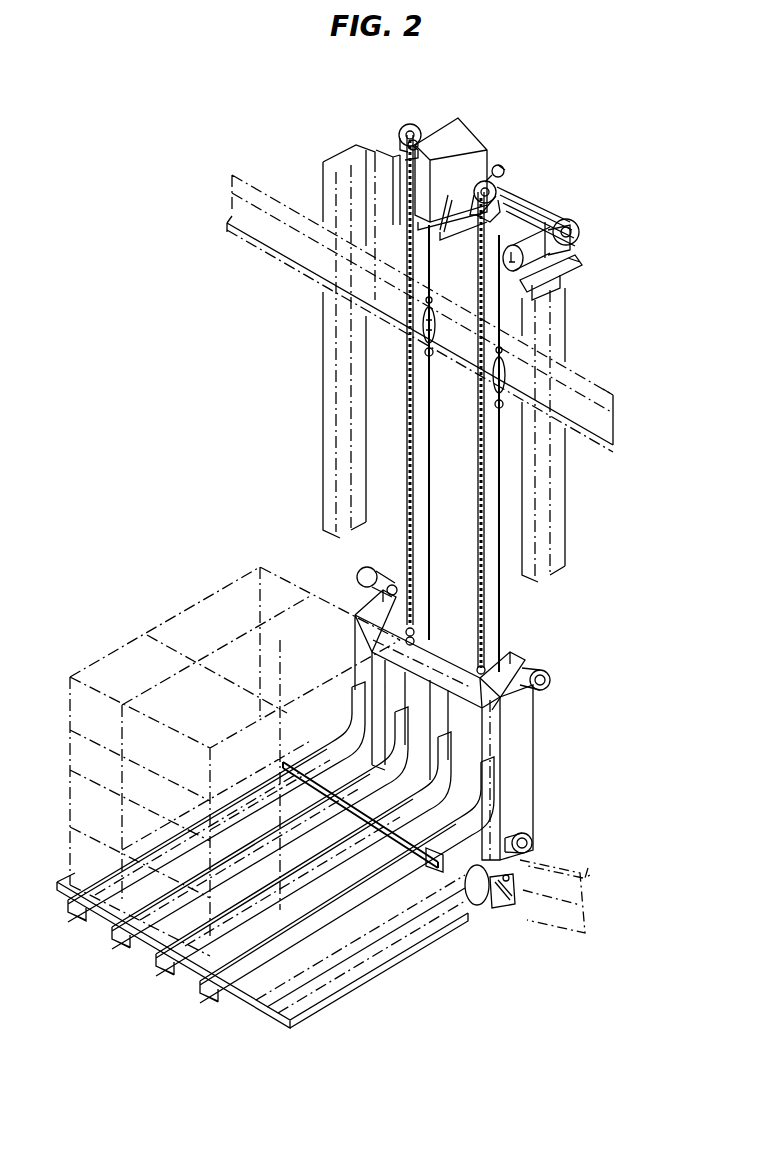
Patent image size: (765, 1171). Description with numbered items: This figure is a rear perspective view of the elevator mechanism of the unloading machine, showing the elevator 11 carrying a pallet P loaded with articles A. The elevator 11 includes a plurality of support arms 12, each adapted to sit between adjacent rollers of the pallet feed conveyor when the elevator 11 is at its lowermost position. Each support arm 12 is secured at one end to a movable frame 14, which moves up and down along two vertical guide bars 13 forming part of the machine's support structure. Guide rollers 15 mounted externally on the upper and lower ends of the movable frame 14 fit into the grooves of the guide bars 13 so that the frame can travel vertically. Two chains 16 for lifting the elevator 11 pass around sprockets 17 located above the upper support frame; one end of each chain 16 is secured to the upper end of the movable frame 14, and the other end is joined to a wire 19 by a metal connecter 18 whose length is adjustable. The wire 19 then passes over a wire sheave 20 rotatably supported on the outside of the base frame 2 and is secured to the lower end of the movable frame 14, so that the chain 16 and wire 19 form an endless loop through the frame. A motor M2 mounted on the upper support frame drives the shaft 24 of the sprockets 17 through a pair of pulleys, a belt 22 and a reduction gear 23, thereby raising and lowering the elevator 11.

The base frame 2 is at (575, 870).
The elevator 11 is at (554, 778).
The support arms 12 is at (215, 990).
The vertical guide bars 13 is at (323, 487).
The movable frame 14 is at (440, 630).
The guide rollers 15 is at (368, 575).
The chains 16 is at (407, 404).
The sprockets 17 is at (411, 128).
The metal connecter 18 is at (436, 328).
The wire 19 is at (430, 418).
The wire sheave 20 is at (478, 905).
The belt 22 is at (560, 215).
The reduction gear 23 is at (462, 128).
The shaft 24 is at (405, 139).
The motor M2 is at (572, 266).
The articles A is at (186, 610).
The pallet P is at (342, 995).